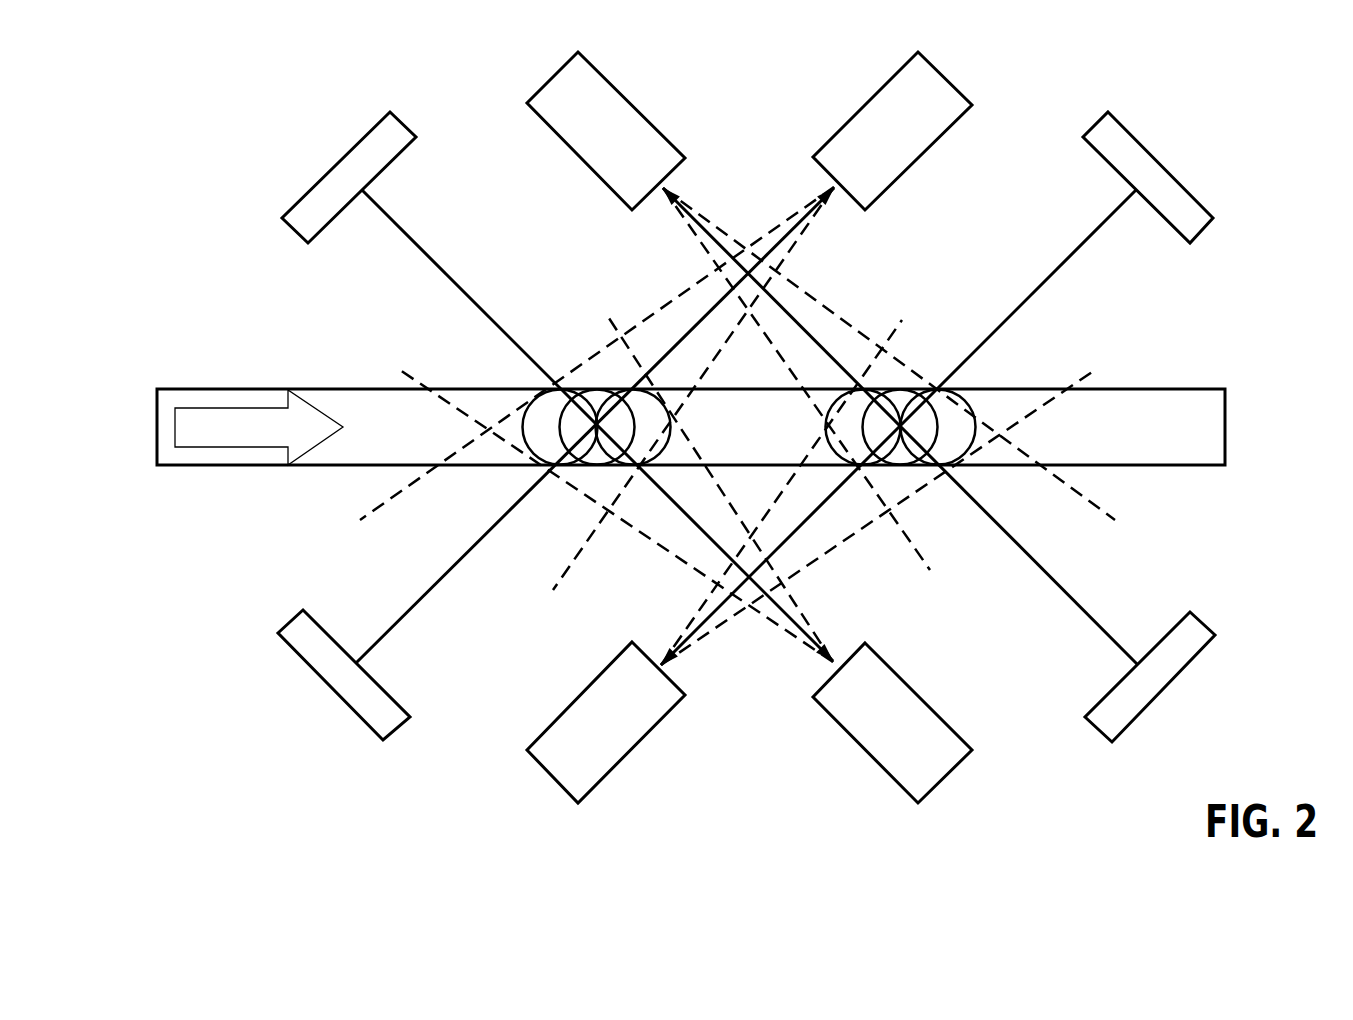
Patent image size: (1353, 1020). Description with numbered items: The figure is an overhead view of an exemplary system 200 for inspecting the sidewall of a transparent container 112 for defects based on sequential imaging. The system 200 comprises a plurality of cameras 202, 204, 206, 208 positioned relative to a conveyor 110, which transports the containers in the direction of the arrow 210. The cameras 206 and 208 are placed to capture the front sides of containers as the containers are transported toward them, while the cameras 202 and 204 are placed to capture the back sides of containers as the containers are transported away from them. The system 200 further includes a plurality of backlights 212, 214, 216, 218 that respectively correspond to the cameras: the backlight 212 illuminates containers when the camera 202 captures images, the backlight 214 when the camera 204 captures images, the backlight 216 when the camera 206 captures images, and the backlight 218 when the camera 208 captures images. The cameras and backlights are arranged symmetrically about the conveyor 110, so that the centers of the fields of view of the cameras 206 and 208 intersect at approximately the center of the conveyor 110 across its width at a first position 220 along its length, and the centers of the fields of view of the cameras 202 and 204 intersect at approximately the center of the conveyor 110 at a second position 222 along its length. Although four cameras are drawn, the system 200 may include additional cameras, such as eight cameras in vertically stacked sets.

The system 200 is at (191, 123).
The conveyor 110 is at (1170, 389).
The arrow 210 is at (241, 440).
The container 112 is at (530, 453).
The camera 202 is at (627, 95).
The camera 204 is at (627, 757).
The camera 206 is at (945, 73).
The camera 208 is at (913, 687).
The backlight 212 is at (1208, 623).
The backlight 214 is at (1210, 192).
The backlight 216 is at (383, 688).
The backlight 218 is at (402, 120).
The first position 220 is at (597, 366).
The second position 222 is at (905, 370).